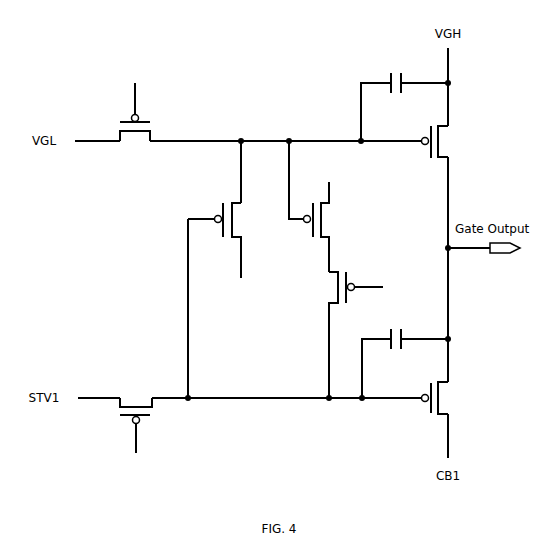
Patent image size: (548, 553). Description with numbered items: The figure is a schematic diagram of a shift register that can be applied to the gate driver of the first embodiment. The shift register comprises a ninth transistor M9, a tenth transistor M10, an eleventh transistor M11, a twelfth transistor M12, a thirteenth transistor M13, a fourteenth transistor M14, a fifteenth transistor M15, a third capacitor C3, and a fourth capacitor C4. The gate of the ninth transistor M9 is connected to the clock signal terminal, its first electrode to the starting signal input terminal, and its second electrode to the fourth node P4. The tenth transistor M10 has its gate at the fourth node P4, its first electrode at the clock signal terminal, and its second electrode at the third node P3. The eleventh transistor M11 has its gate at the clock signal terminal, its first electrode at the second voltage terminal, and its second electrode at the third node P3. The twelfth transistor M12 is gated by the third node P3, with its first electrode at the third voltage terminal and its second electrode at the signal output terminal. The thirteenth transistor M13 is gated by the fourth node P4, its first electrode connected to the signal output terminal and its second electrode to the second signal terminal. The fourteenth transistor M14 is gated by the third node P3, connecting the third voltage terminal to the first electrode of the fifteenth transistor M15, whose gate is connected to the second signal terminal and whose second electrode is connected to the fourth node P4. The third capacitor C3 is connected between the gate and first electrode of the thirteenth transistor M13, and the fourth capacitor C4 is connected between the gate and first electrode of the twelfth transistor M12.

The ninth transistor M9 is at (136, 426).
The tenth transistor M10 is at (226, 252).
The eleventh transistor M11 is at (135, 112).
The twelfth transistor M12 is at (454, 142).
The thirteenth transistor M13 is at (454, 398).
The fourteenth transistor M14 is at (327, 206).
The fifteenth transistor M15 is at (352, 335).
The third capacitor C3 is at (405, 363).
The fourth capacitor C4 is at (404, 96).
The third node P3 is at (269, 162).
The fourth node P4 is at (304, 408).